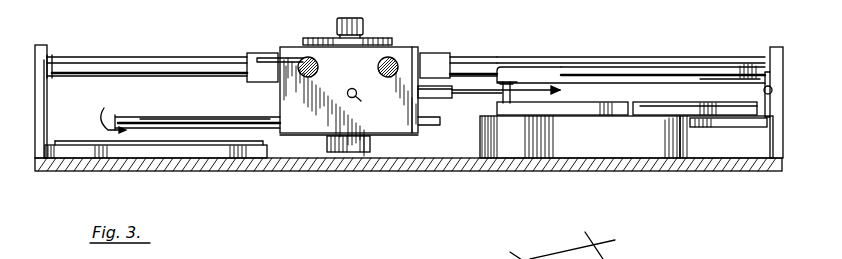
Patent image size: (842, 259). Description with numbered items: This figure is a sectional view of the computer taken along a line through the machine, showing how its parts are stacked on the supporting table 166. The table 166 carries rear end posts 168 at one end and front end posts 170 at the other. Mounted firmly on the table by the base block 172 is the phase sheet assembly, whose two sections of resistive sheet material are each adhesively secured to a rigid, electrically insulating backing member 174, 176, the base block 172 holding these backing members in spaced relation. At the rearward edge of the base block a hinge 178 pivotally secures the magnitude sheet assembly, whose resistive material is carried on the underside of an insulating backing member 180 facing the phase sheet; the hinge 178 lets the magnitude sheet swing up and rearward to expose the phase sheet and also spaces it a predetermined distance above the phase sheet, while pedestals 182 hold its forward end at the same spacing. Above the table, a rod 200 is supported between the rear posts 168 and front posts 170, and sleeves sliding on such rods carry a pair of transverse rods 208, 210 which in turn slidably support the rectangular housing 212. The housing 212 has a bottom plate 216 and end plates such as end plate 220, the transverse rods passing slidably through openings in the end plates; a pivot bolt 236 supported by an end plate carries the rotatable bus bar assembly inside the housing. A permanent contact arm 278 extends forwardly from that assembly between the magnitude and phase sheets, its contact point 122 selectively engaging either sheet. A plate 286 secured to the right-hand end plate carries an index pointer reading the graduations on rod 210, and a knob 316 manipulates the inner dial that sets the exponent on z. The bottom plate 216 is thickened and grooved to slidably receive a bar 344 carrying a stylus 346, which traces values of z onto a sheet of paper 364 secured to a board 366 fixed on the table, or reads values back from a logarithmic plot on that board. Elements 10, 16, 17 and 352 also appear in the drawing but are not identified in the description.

The tube 10 is at (640, 85).
The support block 16 is at (667, 105).
The support block 17 is at (607, 107).
The contact point 122 is at (560, 88).
The table 166 is at (743, 172).
The rear end posts 168 is at (782, 47).
The front end posts 170 is at (43, 47).
The base block 172 is at (700, 150).
The rigid backing member 174 is at (742, 112).
The rigid backing member 176 is at (522, 112).
The hinge 178 is at (772, 90).
The backing member 180 is at (690, 72).
The pedestals 182 is at (518, 82).
The rod 200 is at (145, 62).
The transverse rod 208 is at (387, 57).
The transverse rod 210 is at (301, 58).
The rectangular housing 212 is at (421, 39).
The bottom plate 216 is at (405, 138).
The end plate 220 is at (312, 123).
The bolt 236 is at (373, 103).
The permanent contact arm 278 is at (475, 89).
The plate 286 is at (262, 55).
The knob 316 is at (337, 27).
The bar 344 is at (226, 130).
The stylus 346 is at (106, 111).
The rod surface 352 is at (168, 118).
The sheet of paper 364 is at (81, 141).
The board 366 is at (131, 150).